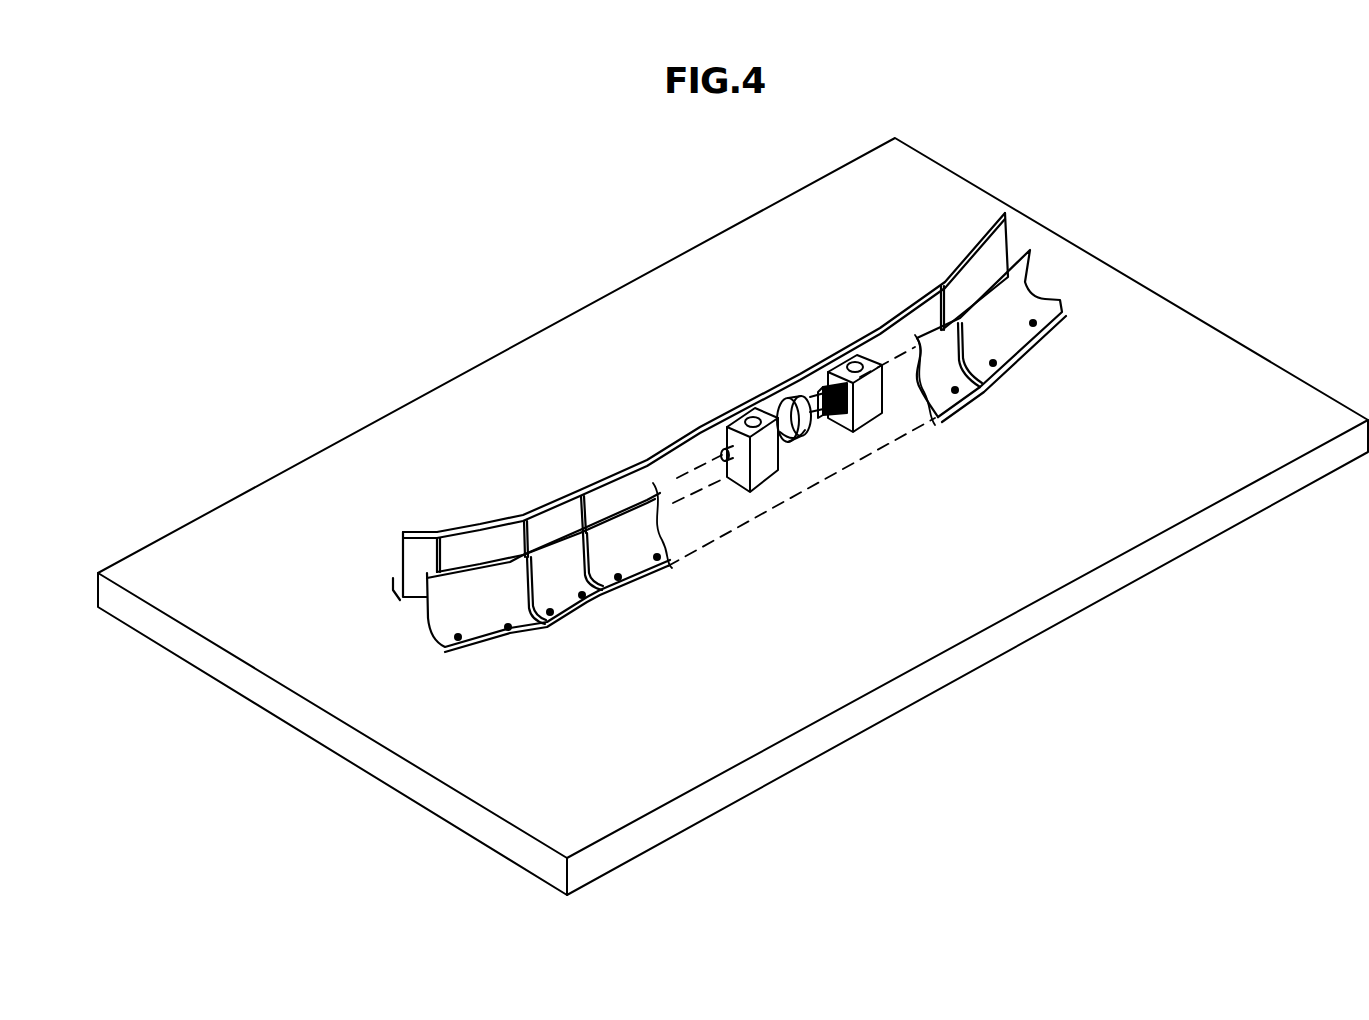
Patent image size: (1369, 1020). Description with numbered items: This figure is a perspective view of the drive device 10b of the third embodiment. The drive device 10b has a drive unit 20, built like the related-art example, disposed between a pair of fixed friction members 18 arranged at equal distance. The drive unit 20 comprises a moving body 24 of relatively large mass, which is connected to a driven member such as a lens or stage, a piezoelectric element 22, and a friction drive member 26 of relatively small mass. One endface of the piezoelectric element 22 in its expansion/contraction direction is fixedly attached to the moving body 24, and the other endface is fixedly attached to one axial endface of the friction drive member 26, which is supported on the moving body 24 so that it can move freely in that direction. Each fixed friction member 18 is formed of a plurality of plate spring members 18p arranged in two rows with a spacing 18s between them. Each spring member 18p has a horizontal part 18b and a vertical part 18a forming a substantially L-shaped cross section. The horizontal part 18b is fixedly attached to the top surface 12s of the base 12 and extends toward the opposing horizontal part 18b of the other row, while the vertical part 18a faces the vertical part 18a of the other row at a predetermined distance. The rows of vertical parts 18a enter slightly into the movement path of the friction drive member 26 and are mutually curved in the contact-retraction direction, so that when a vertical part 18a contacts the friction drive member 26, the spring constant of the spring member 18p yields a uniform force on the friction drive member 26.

The drive device 10b is at (351, 239).
The base 12 is at (733, 516).
The top surface 12s is at (830, 667).
The fixed friction member 18 is at (608, 538).
The vertical part 18a is at (433, 607).
The horizontal part 18b is at (672, 543).
The plate spring member 18p is at (313, 860).
The spacing 18s is at (530, 573).
The drive unit 20 is at (842, 461).
The piezoelectric element 22 is at (843, 413).
The moving body 24 is at (889, 422).
The friction drive member 26 is at (812, 432).